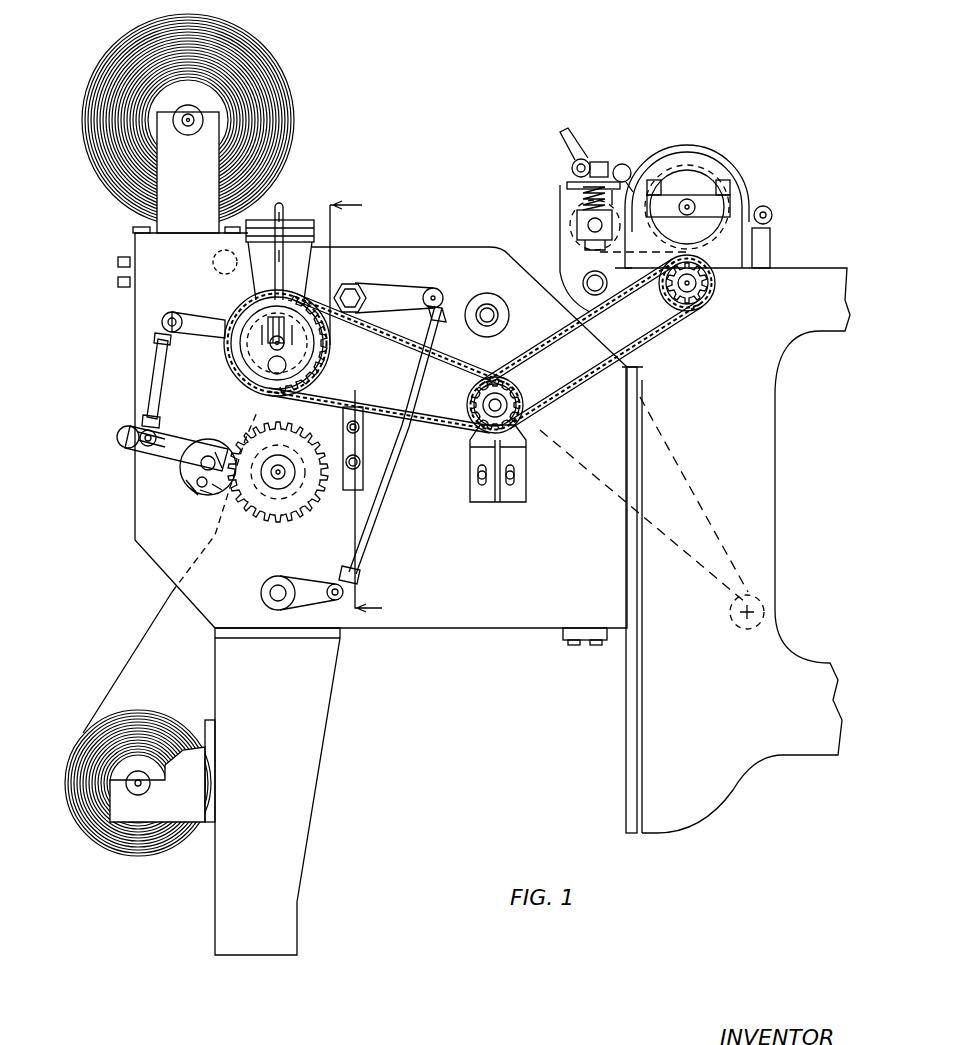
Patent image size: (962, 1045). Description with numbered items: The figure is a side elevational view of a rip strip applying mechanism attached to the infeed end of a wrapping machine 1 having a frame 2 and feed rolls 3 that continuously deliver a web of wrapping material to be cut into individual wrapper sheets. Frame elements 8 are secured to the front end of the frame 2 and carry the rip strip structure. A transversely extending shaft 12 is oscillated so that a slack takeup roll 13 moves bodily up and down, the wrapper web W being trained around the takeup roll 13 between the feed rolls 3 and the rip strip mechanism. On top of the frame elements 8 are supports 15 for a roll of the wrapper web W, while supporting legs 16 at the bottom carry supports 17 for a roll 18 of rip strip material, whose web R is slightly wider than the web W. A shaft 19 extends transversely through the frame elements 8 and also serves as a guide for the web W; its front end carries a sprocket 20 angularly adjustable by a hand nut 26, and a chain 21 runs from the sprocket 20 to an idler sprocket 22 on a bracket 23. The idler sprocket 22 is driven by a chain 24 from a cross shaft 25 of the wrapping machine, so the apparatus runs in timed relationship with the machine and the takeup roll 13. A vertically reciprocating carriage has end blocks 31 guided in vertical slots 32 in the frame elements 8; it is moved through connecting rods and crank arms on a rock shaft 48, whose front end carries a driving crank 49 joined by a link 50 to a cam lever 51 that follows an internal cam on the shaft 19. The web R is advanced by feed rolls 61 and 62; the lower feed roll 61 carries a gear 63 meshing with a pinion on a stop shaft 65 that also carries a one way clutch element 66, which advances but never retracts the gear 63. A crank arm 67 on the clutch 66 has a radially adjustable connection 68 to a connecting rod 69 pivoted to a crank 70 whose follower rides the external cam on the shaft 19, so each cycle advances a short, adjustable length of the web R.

The wrapping machine 1 is at (780, 282).
The frame 2 is at (640, 703).
The feed rolls 3 is at (570, 250).
The frame elements 8 is at (510, 608).
The shaft 12 is at (490, 315).
The takeup roll 13 is at (775, 607).
The supports 15 is at (205, 155).
The supporting legs 16 is at (318, 758).
The supports 17 is at (195, 793).
The roll of rip strip material 18 is at (145, 848).
The shaft 19 is at (268, 345).
The sprocket 20 is at (322, 345).
The chain 21 is at (362, 420).
The idler sprocket 22 is at (520, 440).
The bracket 23 is at (515, 497).
The chain 24 is at (652, 335).
The cross shaft 25 is at (690, 287).
The hand nut 26 is at (258, 378).
The end blocks 31 is at (368, 467).
The vertical slots 32 is at (357, 488).
The rock shaft 48 is at (275, 593).
The driving crank 49 is at (320, 580).
The link 50 is at (362, 555).
The cam lever 51 is at (405, 293).
The lower feed roll 61 is at (302, 497).
The feed roll 62 is at (255, 410).
The gear 63 is at (258, 510).
The stop shaft 65 is at (188, 480).
The one way clutch element 66 is at (205, 492).
The crank arm 67 is at (172, 455).
The radially adjustable connection 68 is at (130, 445).
The connecting rod 69 is at (150, 400).
The crank 70 is at (205, 322).
The web of rip strip material R is at (160, 635).
The web of wrapping material W is at (243, 243).